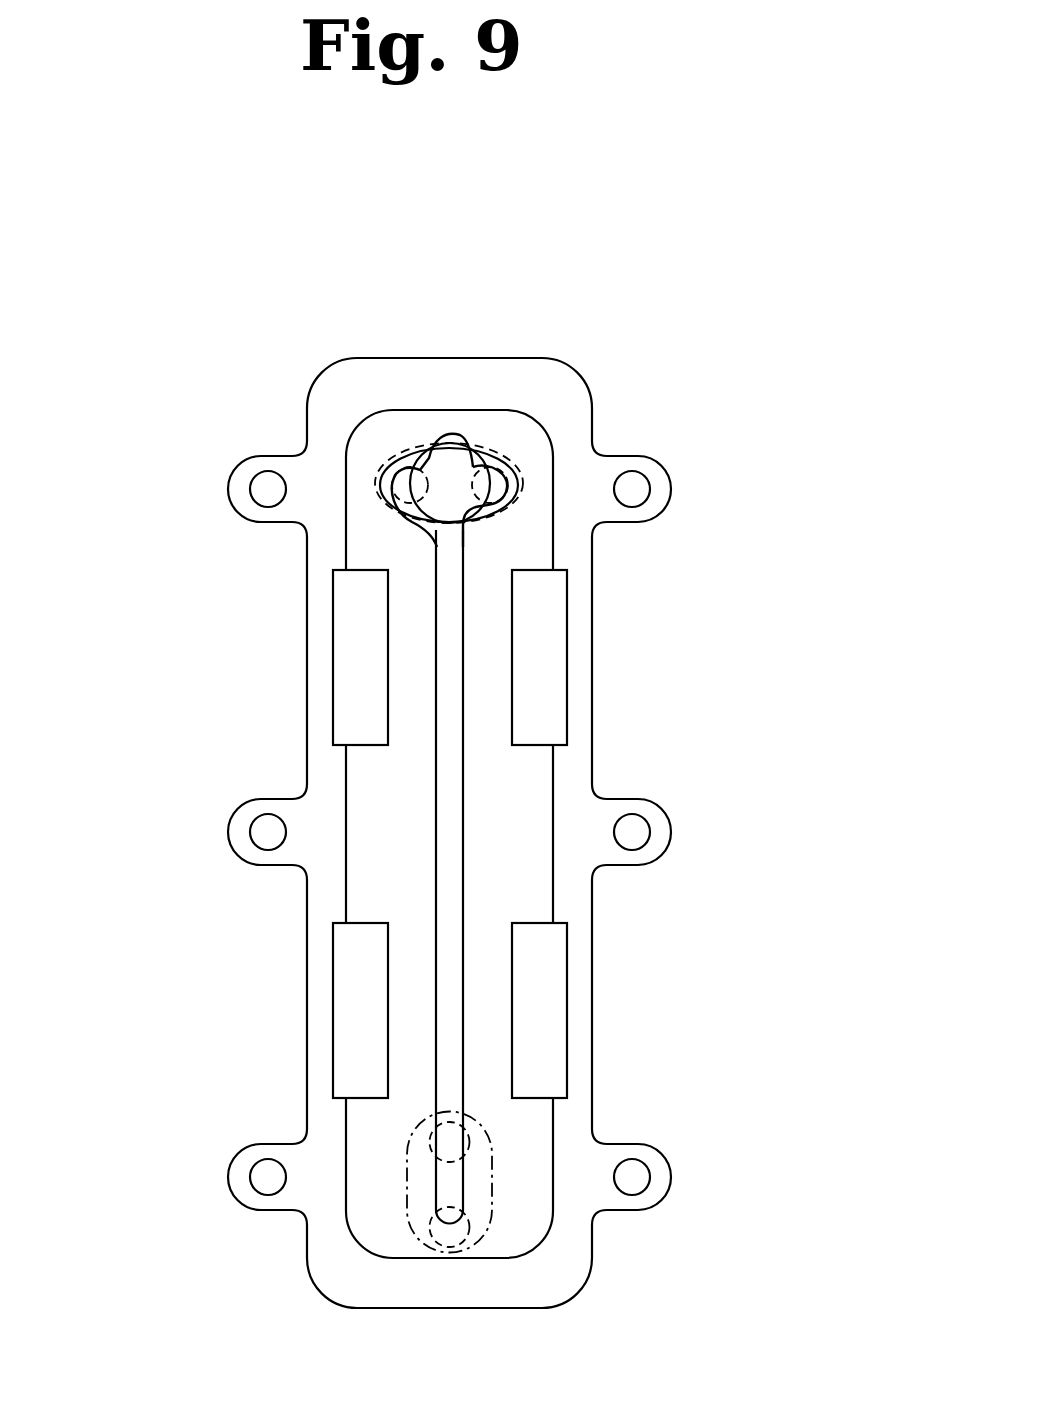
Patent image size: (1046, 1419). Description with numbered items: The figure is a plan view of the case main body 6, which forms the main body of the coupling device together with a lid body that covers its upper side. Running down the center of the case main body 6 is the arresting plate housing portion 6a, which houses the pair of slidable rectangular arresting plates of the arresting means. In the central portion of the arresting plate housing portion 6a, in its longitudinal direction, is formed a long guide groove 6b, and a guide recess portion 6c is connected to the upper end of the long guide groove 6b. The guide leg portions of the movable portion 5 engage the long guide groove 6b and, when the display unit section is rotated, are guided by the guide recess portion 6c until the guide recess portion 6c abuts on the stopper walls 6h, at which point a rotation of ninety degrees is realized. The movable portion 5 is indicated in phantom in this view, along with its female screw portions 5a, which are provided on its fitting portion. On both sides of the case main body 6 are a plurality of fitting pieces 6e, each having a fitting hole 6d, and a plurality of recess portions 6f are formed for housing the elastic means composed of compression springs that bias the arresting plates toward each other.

The movable portion 5 is at (518, 443).
The female screw portion 5a is at (440, 1235).
The case main body 6 is at (615, 722).
The arresting plate housing portion 6a is at (372, 886).
The long guide groove 6b is at (452, 964).
The guide recess portion 6c is at (448, 488).
The fitting hole 6d is at (262, 496).
The fitting piece 6e is at (262, 455).
The recess portion 6f is at (335, 634).
The stopper wall 6h is at (397, 465).